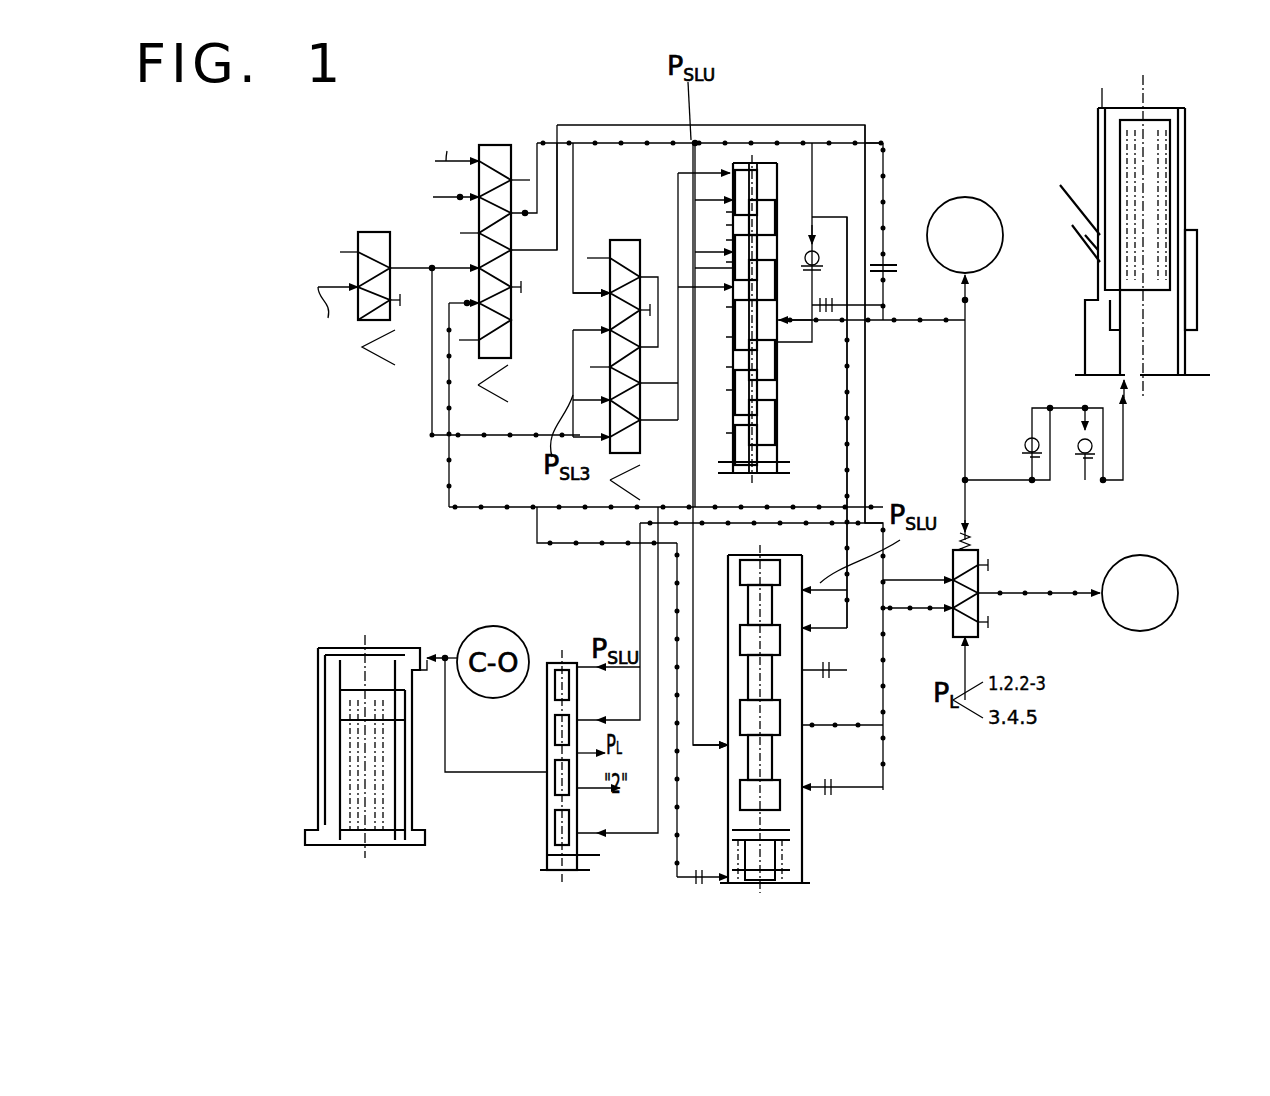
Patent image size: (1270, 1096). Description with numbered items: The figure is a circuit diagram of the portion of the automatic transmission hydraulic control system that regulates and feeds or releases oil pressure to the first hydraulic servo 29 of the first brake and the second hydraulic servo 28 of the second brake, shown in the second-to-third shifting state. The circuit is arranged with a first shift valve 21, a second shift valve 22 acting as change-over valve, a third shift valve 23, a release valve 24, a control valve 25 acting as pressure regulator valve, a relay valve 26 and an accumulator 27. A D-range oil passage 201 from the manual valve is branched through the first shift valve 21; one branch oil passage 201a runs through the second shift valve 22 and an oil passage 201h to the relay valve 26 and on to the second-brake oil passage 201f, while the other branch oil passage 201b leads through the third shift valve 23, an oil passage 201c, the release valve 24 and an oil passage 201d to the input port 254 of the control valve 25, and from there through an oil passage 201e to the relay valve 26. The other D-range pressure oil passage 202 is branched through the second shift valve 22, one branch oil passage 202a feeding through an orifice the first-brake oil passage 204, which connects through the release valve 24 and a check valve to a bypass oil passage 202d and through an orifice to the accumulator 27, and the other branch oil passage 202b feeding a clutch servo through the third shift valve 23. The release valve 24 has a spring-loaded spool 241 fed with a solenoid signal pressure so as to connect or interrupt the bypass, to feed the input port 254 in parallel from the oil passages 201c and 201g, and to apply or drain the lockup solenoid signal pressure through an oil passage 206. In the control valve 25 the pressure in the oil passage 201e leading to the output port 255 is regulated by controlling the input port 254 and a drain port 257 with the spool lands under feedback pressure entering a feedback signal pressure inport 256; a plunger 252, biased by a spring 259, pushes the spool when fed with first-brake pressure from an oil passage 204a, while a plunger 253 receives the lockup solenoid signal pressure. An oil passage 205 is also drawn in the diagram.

The 1–2 shift valve 21 is at (371, 229).
The 2–3 shift valve 22 is at (495, 143).
The 3–4 shift valve 23 is at (622, 238).
The B-2 release valve 24 is at (772, 160).
The B-3 control valve 25 is at (774, 556).
The relay valve 26 is at (979, 546).
The B-2 accumulator 27 is at (1198, 160).
The second hydraulic servo 28 is at (1140, 555).
The first hydraulic servo 29 is at (992, 203).
The D-range oil passage 201 is at (362, 334).
The branch oil passage 201a is at (440, 266).
The branch oil passage 201b is at (432, 405).
The oil passage 201c is at (608, 311).
The oil passage 201d is at (693, 630).
The oil passage 201e is at (885, 675).
The brake B-3 oil passage 201f is at (1043, 574).
The oil passage 201g is at (700, 160).
The oil passage 201h is at (867, 404).
The D-range pressure oil passage 202 is at (432, 195).
The branch oil passage 202a is at (600, 170).
The branch oil passage 202b is at (575, 170).
The bypass oil passage 202d is at (803, 185).
The brake B-2 oil passage 204 is at (916, 322).
The oil passage 204a is at (583, 545).
The oil passage 205 is at (678, 187).
The oil passage 206 is at (866, 459).
The spool 241 is at (757, 409).
The plunger 252 is at (800, 834).
The plunger 253 is at (770, 607).
The input port 254 is at (726, 752).
The output port 255 is at (798, 728).
The feedback signal pressure inport 256 is at (820, 782).
The drain port 257 is at (802, 707).
The spring 259 is at (802, 884).